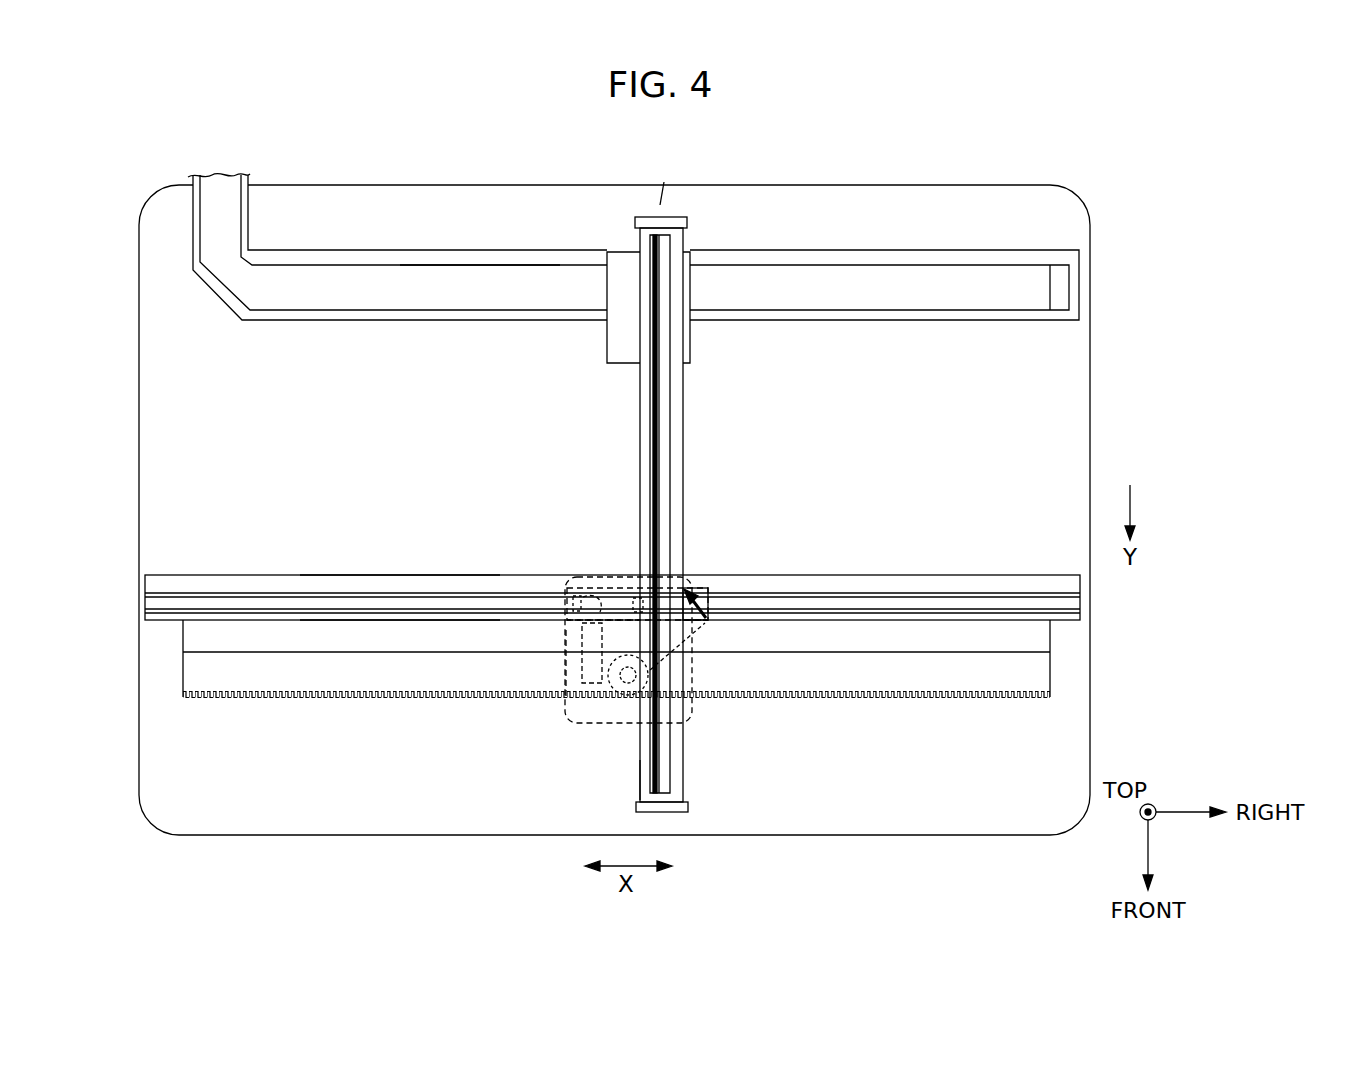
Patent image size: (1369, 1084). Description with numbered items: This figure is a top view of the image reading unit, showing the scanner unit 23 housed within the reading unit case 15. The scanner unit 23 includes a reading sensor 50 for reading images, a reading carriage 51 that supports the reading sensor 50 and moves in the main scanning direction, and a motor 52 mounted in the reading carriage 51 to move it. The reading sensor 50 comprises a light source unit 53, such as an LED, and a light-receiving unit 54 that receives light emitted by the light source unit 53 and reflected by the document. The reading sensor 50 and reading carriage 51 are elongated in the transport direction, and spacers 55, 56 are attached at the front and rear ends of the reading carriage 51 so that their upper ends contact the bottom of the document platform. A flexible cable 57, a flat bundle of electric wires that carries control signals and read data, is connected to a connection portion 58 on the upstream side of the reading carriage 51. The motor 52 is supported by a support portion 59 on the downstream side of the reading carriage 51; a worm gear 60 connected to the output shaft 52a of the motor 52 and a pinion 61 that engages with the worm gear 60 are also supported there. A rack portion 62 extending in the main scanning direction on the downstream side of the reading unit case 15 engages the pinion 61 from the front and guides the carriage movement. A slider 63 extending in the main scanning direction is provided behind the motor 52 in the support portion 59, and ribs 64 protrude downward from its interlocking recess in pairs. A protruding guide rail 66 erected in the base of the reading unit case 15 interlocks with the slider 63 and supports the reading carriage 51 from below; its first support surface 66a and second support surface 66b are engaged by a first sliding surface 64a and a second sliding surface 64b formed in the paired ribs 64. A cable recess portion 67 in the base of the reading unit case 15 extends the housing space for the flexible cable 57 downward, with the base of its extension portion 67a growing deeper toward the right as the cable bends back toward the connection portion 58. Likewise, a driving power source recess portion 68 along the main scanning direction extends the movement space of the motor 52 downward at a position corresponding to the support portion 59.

The reading unit case 15 is at (1087, 713).
The scanner unit 23 is at (658, 216).
The reading sensor 50 is at (678, 478).
The reading carriage 51 is at (640, 772).
The motor 52 is at (583, 704).
The output shaft 52a is at (582, 665).
The light source unit 53 is at (668, 409).
The light-receiving unit 54 is at (650, 441).
The spacer 55 is at (689, 805).
The spacer 56 is at (689, 222).
The flexible cable 57 is at (232, 212).
The connection portion 58 is at (690, 285).
The support portion 59 is at (693, 673).
The worm gear 60 is at (692, 628).
The pinion 61 is at (603, 700).
The rack portion 62 is at (463, 698).
The slider 63 is at (692, 590).
The ribs 64 is at (596, 610).
The first sliding surface 64a is at (566, 618).
The second sliding surface 64b is at (560, 590).
The guide rail 66 is at (466, 605).
The first support surface 66a is at (401, 621).
The second support surface 66b is at (401, 596).
The cable recess portion 67 is at (881, 262).
The extension portion 67a is at (536, 262).
The driving power source recess portion 68 is at (185, 668).